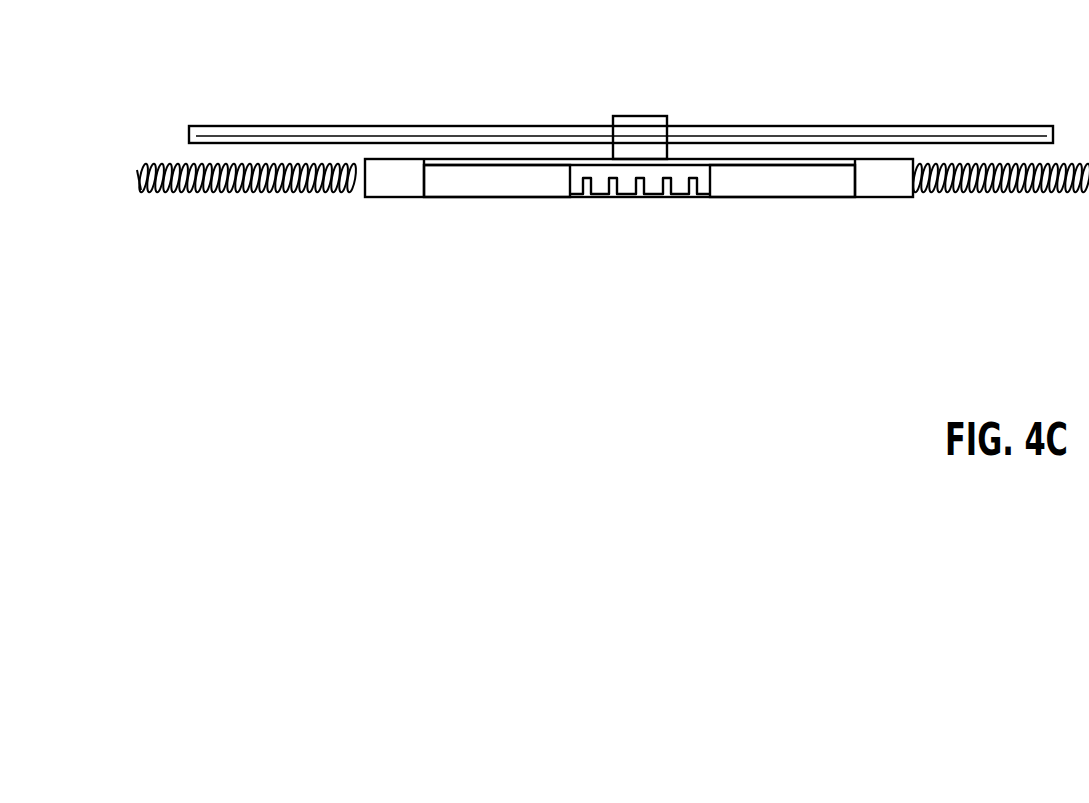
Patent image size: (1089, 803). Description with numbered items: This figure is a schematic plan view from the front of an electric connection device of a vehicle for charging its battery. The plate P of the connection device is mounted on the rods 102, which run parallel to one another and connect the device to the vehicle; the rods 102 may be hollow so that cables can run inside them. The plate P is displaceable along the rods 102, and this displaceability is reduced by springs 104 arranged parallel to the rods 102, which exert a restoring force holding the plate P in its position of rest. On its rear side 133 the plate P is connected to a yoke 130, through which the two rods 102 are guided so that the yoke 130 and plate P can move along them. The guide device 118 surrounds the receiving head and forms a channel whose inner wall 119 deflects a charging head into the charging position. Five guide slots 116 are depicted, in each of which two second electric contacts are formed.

The rods 102 is at (937, 128).
The spring 104 is at (210, 187).
The guide slots 116 is at (693, 206).
The guide device 118 is at (393, 197).
The channel inner wall 119 is at (508, 187).
The yoke 130 is at (642, 125).
The rear side 133 is at (403, 158).
The plate P is at (531, 158).